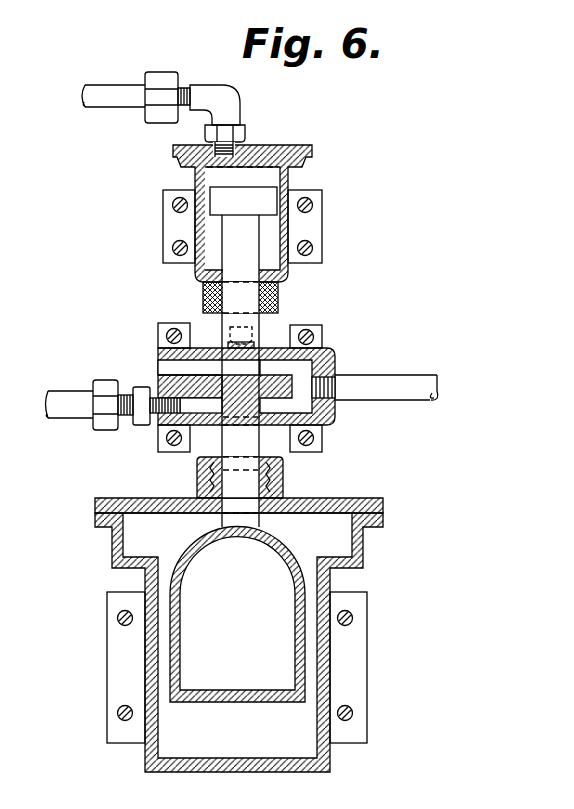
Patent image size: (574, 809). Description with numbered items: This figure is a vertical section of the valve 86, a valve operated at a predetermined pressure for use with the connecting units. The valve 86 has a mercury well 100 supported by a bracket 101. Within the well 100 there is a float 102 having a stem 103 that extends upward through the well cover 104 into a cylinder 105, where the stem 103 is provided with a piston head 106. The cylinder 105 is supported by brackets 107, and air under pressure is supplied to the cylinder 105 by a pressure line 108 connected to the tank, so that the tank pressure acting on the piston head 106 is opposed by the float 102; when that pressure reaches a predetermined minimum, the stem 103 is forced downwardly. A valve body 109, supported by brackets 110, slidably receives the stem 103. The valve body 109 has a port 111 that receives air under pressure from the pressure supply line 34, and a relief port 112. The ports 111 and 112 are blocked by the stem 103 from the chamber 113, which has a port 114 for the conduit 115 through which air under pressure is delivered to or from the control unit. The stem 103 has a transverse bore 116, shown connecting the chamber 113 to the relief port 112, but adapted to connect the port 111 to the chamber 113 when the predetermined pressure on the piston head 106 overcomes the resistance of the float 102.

The pressure supply line 34 is at (67, 392).
The valve 86 is at (283, 293).
The mercury well 100 is at (288, 733).
The bracket 101 is at (360, 640).
The float 102 is at (237, 615).
The stem 103 is at (243, 483).
The well cover 104 is at (340, 500).
The cylinder 105 is at (290, 180).
The piston head 106 is at (234, 193).
The brackets 107 is at (168, 226).
The pressure line 108 is at (127, 99).
The valve body 109 is at (333, 350).
The brackets 110 is at (168, 323).
The port 111 is at (195, 411).
The relief port 112 is at (158, 365).
The chamber 113 is at (302, 383).
The port 114 is at (338, 392).
The conduit 115 is at (397, 381).
The transverse bore 116 is at (260, 334).